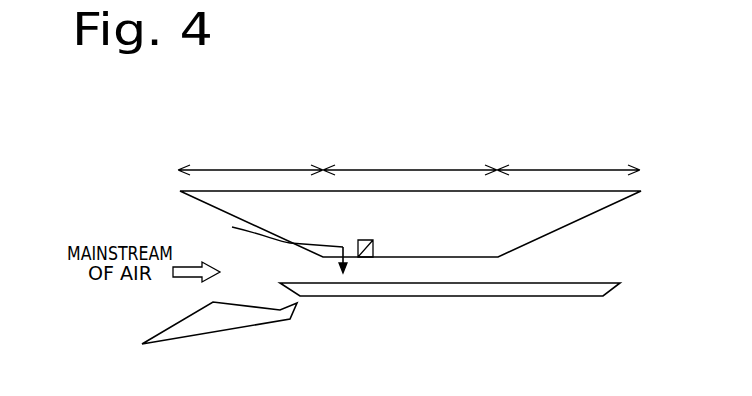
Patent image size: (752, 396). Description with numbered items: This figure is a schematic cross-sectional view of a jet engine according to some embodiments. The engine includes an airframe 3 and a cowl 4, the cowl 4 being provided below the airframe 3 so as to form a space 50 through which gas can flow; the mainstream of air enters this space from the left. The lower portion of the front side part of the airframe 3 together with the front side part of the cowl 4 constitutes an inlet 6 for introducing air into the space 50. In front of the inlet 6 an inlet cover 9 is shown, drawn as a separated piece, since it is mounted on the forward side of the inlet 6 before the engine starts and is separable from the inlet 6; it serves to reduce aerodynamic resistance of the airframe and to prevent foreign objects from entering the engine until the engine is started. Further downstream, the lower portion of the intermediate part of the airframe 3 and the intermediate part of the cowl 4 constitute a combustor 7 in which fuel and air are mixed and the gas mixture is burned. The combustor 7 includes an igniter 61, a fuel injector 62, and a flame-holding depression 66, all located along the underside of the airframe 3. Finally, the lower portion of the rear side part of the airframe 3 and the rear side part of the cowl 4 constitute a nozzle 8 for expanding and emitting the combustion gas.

The airframe 3 is at (535, 231).
The cowl 4 is at (543, 288).
The inlet 6 is at (250, 159).
The combustor 7 is at (410, 159).
The nozzle 8 is at (568, 159).
The inlet cover 9 is at (227, 325).
The space 50 is at (305, 268).
The igniter 61 is at (358, 240).
The fuel injector 62 is at (276, 231).
The flame-holding depression 66 is at (373, 240).